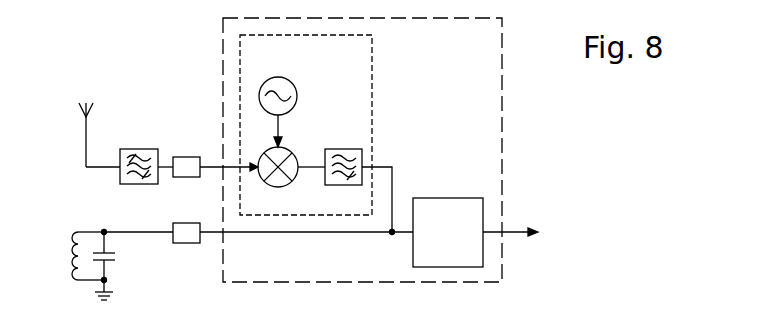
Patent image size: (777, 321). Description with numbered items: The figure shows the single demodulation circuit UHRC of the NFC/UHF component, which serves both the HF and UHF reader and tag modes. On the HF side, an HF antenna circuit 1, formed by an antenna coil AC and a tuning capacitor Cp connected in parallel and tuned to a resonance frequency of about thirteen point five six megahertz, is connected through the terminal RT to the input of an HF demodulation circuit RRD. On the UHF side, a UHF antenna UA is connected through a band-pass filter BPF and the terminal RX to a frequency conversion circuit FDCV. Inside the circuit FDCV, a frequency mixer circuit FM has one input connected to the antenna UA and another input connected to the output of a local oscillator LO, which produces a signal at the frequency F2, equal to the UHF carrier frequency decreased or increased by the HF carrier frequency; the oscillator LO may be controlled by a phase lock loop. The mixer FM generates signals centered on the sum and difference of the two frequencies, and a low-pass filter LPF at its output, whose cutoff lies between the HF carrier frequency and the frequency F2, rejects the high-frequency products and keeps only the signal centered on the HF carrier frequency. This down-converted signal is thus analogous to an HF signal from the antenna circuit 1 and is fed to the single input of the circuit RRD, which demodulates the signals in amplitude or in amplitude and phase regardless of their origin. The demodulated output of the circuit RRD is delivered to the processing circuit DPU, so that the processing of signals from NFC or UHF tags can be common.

The HF antenna circuit 1 is at (91, 237).
The UHF antenna UA is at (87, 123).
The band-pass filter BPF is at (139, 155).
The terminal RX is at (186, 167).
The terminal RT is at (186, 233).
The antenna coil AC is at (70, 256).
The tuning capacitor Cp is at (119, 256).
The demodulation circuit UHRC is at (478, 46).
The frequency conversion circuit FDCV is at (333, 62).
The local oscillator LO is at (294, 96).
The oscillator signal frequency F2 is at (287, 131).
The frequency mixer circuit FM is at (278, 179).
The low-pass filter LPF is at (343, 156).
The HF demodulation circuit RRD is at (426, 241).
The processing circuit DPU is at (535, 233).